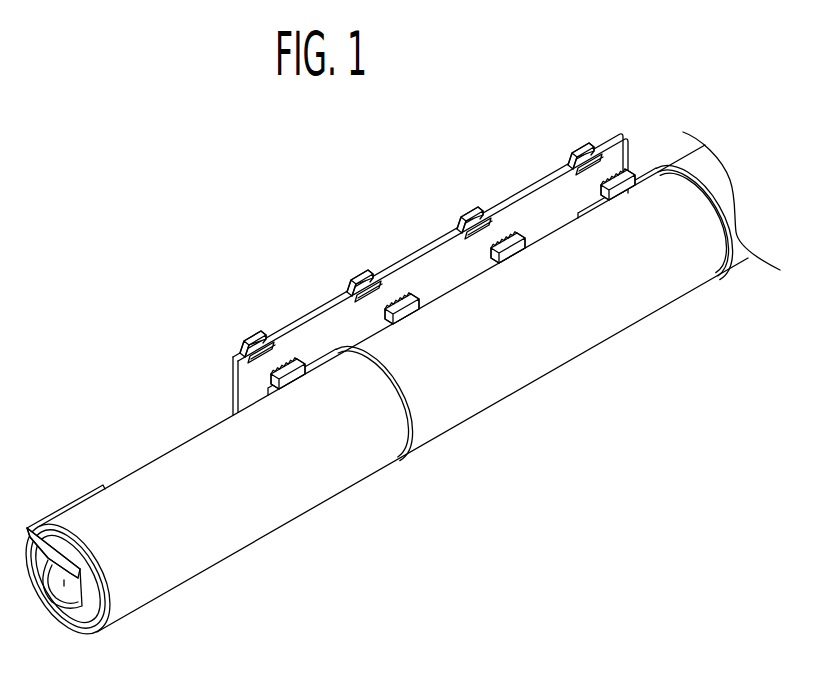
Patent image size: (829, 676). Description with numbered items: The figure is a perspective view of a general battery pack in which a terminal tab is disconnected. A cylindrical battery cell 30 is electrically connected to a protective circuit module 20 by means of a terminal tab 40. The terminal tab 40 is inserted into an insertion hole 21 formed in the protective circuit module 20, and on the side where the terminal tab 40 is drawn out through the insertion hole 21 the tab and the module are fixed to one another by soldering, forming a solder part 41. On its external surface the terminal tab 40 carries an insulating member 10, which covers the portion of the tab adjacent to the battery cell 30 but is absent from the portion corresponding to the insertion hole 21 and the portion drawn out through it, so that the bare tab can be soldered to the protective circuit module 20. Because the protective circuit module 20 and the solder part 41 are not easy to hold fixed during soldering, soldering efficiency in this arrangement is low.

The insulating member 10 is at (402, 304).
The protective circuit module 20 is at (528, 217).
The insertion hole 21 is at (360, 293).
The battery cell 30 is at (550, 357).
The terminal tab 40 is at (401, 297).
The solder part 41 is at (248, 340).